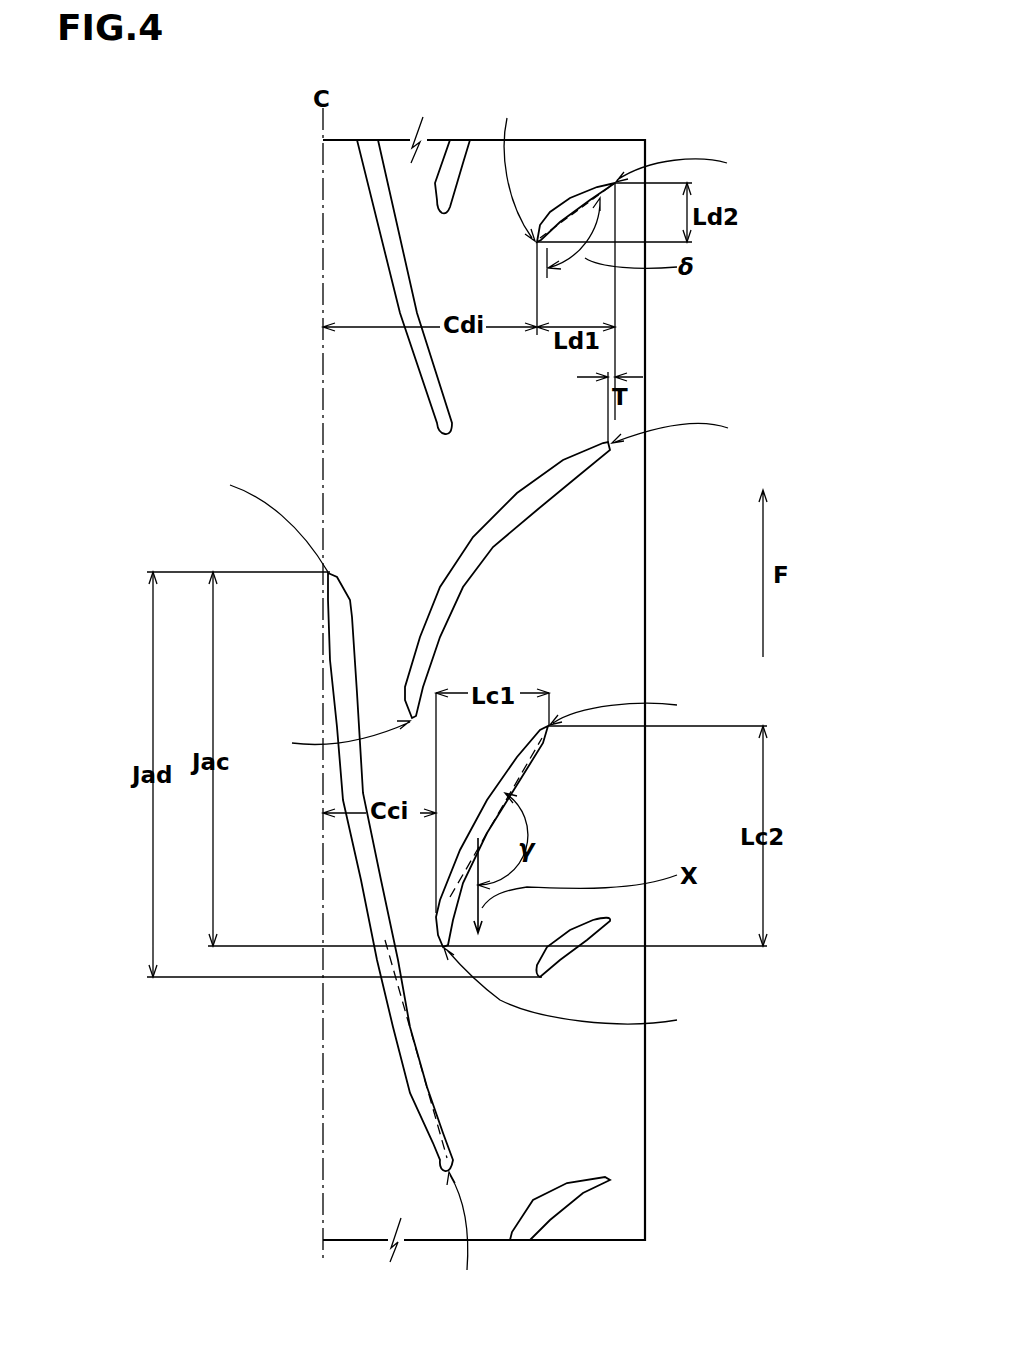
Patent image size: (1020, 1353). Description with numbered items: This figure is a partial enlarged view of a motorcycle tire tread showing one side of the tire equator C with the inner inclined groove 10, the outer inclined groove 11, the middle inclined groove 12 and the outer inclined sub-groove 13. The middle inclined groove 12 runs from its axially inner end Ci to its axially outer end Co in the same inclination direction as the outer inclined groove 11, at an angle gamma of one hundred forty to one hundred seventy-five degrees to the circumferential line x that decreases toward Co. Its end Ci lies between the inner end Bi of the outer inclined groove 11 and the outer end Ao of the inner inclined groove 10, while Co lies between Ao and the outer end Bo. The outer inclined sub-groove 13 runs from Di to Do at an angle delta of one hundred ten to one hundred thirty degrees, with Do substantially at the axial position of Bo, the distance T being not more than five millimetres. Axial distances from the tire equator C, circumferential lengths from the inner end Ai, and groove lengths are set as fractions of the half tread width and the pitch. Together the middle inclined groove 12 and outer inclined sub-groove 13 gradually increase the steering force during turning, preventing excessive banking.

The inner inclined groove 10 is at (397, 1035).
The outer inclined groove 11 is at (490, 550).
The middle inclined groove 12 is at (527, 777).
The outer inclined sub-groove 13 is at (578, 195).